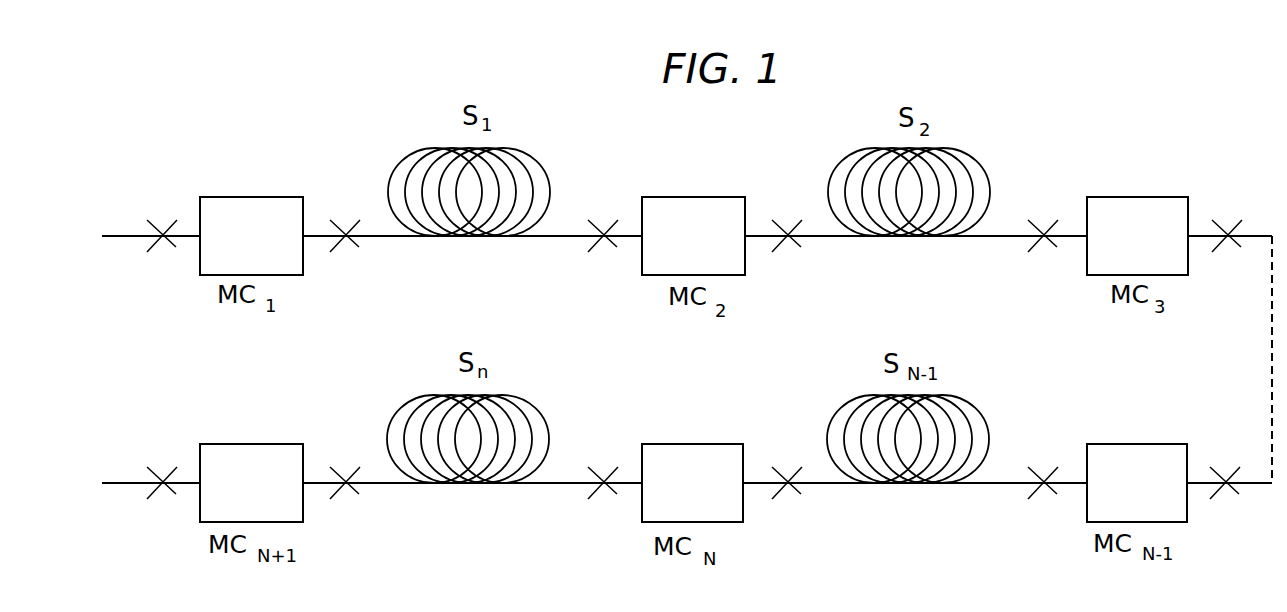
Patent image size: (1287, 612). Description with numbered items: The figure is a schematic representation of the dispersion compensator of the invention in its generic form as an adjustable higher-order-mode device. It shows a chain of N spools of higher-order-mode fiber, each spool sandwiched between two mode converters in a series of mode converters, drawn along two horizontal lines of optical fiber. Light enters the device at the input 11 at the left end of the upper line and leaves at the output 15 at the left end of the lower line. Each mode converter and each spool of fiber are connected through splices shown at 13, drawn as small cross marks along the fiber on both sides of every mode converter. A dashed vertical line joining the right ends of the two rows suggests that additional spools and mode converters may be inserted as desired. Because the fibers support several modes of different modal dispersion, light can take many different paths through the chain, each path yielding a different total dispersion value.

The input 11 is at (127, 236).
The splice 13 is at (687, 377).
The output 15 is at (121, 483).